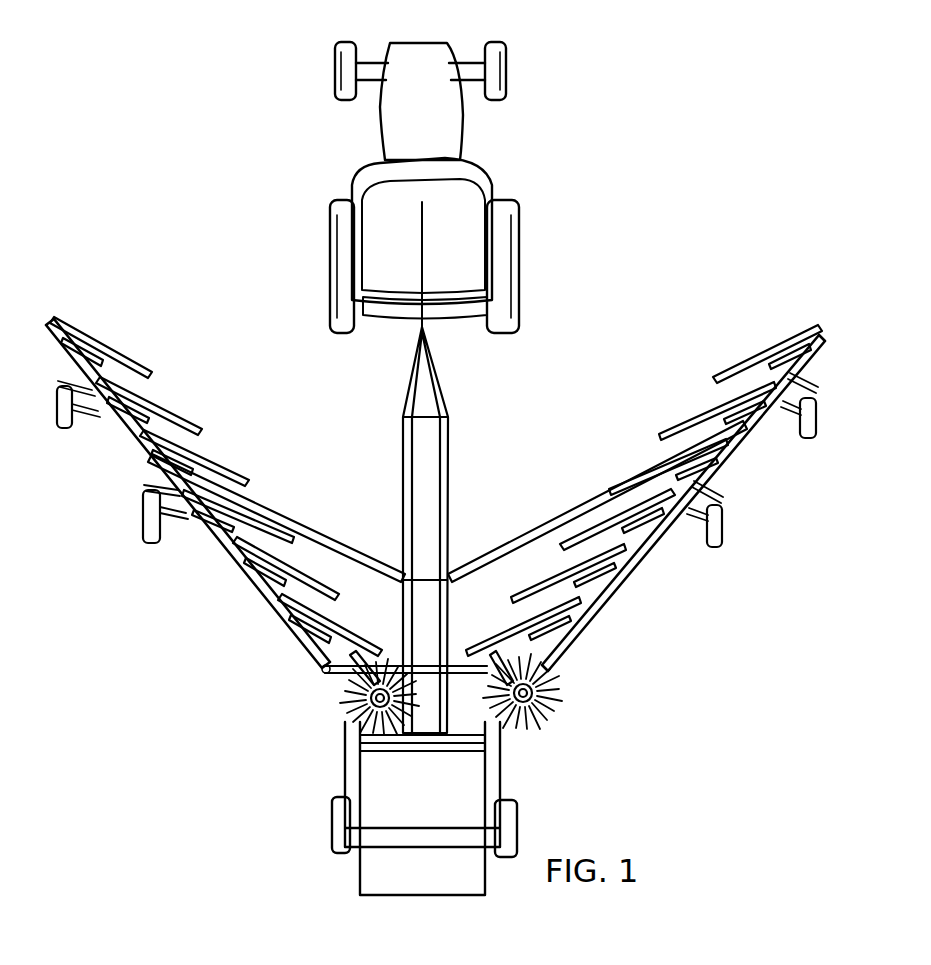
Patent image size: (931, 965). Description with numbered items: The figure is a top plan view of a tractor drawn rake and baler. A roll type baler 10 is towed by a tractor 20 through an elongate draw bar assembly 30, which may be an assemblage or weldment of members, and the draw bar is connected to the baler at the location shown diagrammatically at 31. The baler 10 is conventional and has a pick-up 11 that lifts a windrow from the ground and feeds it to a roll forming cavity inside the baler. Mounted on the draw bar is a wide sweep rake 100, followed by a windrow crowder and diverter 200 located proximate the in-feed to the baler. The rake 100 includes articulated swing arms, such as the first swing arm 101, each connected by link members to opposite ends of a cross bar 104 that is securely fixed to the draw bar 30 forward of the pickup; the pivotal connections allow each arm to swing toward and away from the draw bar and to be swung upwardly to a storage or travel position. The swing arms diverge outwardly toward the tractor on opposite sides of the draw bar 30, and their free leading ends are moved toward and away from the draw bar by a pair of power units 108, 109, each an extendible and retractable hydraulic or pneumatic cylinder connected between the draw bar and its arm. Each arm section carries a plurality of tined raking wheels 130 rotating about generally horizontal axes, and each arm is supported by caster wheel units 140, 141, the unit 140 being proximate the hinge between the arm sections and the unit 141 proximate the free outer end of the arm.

The roll type baler 10 is at (622, 806).
The pick-up 11 is at (487, 737).
The tractor 20 is at (592, 122).
The draw bar assembly 30 is at (452, 505).
The draw bar connection 31 is at (437, 722).
The wide sweep rake 100 is at (794, 626).
The first articulated swing arm 101 is at (240, 560).
The cross bar 104 is at (437, 667).
The power unit 108 is at (318, 538).
The power unit 109 is at (548, 528).
The tined raking wheels 130 is at (150, 376).
The caster wheel unit 140 is at (158, 546).
The caster wheel unit 141 is at (62, 430).
The windrow crowder and diverter 200 is at (598, 681).